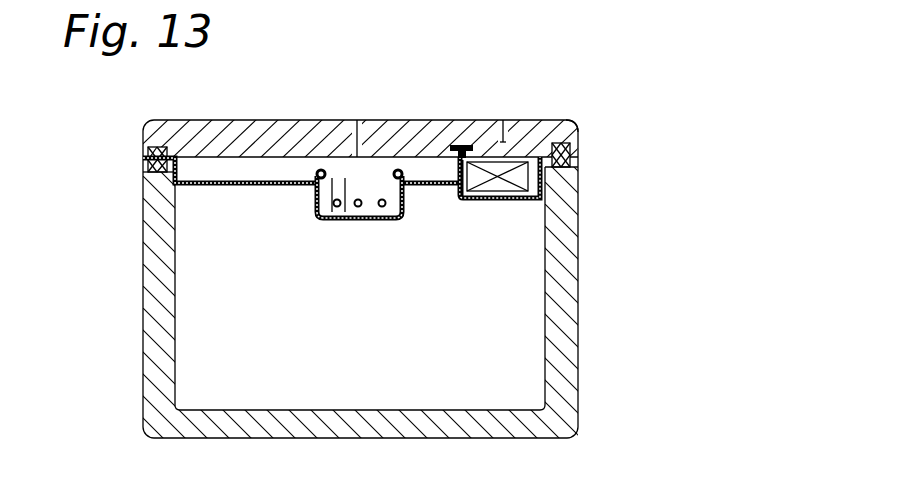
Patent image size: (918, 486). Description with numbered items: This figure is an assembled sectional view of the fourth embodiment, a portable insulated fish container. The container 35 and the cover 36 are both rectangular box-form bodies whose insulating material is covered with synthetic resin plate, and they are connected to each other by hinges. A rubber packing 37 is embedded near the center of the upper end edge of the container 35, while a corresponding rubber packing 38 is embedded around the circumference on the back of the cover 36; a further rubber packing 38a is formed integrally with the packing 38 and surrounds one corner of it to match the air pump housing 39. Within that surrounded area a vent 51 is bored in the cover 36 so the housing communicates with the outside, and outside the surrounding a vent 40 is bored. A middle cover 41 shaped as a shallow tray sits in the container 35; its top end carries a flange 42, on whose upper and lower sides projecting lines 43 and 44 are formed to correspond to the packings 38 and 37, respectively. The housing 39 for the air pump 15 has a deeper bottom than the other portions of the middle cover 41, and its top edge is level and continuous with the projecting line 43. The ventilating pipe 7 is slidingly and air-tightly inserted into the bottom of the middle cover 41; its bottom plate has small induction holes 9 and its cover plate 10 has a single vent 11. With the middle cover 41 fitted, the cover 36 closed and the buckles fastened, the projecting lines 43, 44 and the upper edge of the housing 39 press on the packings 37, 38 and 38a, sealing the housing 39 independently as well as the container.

The ventilating pipe 7 is at (360, 188).
The induction holes 9 is at (356, 210).
The cover plate 10 is at (333, 178).
The vent 11 is at (372, 208).
The air pump 15 is at (488, 168).
The container 35 is at (570, 285).
The cover 36 is at (232, 137).
The rubber packing 37 is at (153, 172).
The rubber packing 38 is at (162, 147).
The rubber packing 38a is at (465, 145).
The air pump housing 39 is at (445, 160).
The vent 40 is at (378, 119).
The middle cover 41 is at (213, 188).
The flange 42 is at (574, 160).
The projecting line 43 is at (575, 139).
The projecting line 44 is at (575, 184).
The vent 51 is at (478, 155).